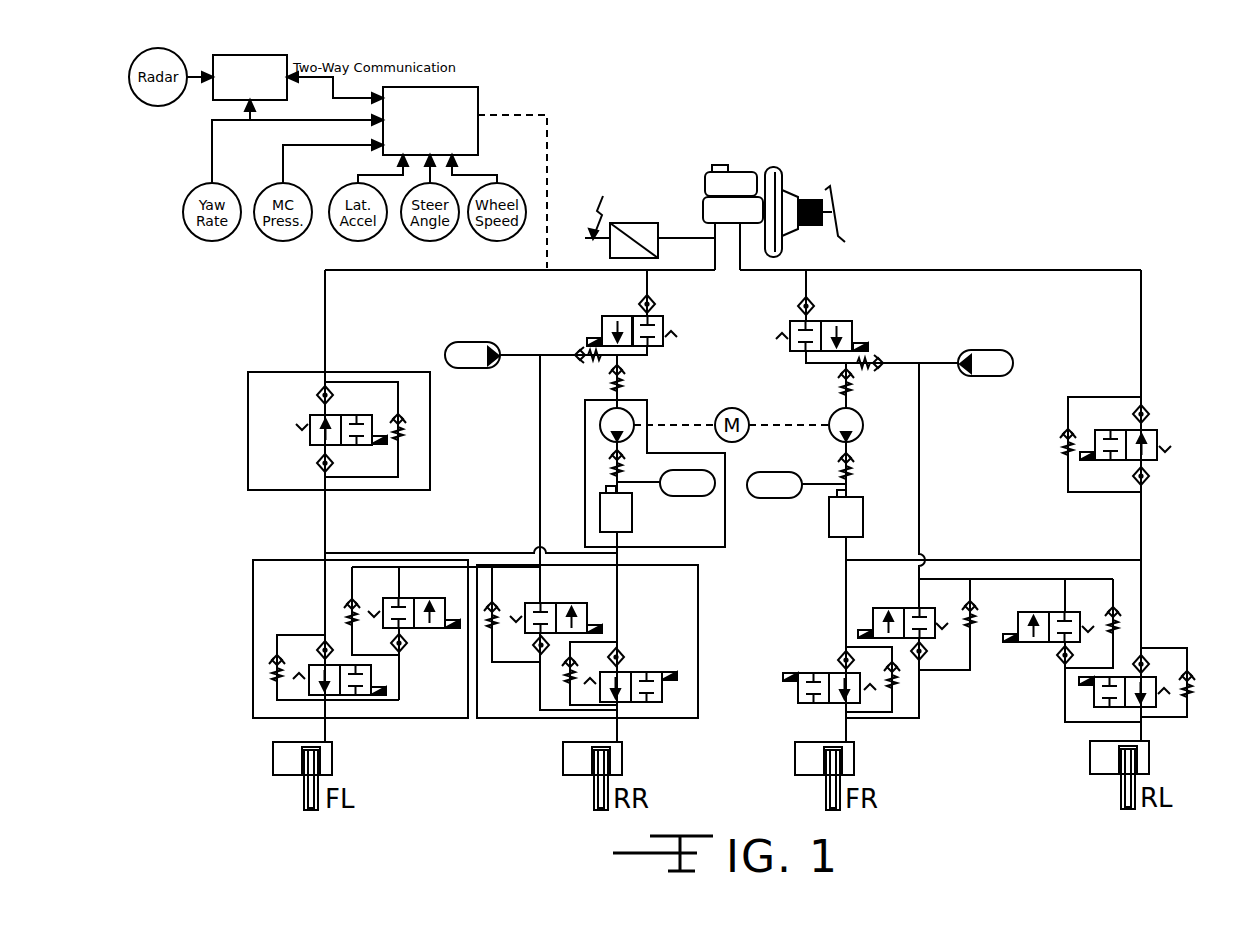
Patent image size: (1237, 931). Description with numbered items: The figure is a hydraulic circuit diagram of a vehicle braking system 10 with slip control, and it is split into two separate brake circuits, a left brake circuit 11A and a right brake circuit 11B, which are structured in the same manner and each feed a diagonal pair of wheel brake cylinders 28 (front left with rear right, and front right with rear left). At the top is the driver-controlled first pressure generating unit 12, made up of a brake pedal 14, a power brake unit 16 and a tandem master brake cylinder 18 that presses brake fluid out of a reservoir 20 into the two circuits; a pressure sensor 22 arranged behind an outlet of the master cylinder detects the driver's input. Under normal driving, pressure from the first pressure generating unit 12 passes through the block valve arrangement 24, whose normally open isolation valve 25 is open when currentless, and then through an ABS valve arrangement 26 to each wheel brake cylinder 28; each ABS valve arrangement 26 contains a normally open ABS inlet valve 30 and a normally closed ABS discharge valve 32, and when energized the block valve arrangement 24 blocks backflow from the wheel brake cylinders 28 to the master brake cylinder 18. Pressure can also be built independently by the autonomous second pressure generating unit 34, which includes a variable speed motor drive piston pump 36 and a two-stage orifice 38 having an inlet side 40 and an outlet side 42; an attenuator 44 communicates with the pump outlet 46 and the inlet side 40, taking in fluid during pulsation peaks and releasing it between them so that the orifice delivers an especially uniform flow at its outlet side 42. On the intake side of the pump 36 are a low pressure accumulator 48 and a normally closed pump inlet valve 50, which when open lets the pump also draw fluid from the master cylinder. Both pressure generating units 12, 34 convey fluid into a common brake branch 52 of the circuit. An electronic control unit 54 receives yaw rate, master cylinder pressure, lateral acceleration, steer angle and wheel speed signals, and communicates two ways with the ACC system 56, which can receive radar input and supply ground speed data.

The hydraulic vehicle braking system 10 is at (296, 325).
The left brake circuit 11A is at (325, 290).
The right brake circuit 11B is at (1141, 318).
The driver-controlled first pressure generating unit 12 is at (746, 163).
The brake pedal 14 is at (843, 245).
The power brake unit 16 is at (783, 185).
The tandem master brake cylinder 18 is at (705, 210).
The reservoir 20 is at (710, 185).
The pressure sensor 22 is at (634, 222).
The block valve arrangement 24 is at (248, 395).
The isolation valve 25 is at (306, 444).
The ABS valve arrangement 26 is at (253, 612).
The wheel brake cylinder 28 is at (332, 750).
The ABS inlet valve 30 is at (373, 672).
The ABS discharge valve 32 is at (414, 632).
The autonomous second pressure generating unit 34 is at (647, 410).
The variable speed motor drive piston pump 36 is at (602, 425).
The two-stage orifice 38 is at (600, 520).
The inlet side 40 is at (618, 484).
The outlet side 42 is at (618, 538).
The attenuator 44 is at (770, 500).
The pump outlet 46 is at (607, 444).
The low pressure accumulator 48 is at (470, 342).
The pump inlet valve 50 is at (626, 318).
The common brake branch 52 is at (488, 553).
The electronic control unit 54 is at (468, 87).
The ACC system 56 is at (281, 55).